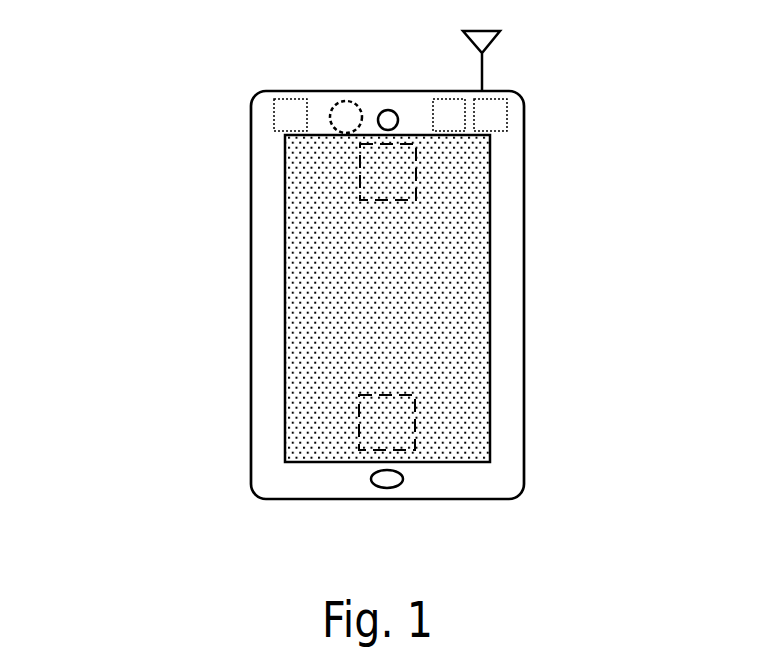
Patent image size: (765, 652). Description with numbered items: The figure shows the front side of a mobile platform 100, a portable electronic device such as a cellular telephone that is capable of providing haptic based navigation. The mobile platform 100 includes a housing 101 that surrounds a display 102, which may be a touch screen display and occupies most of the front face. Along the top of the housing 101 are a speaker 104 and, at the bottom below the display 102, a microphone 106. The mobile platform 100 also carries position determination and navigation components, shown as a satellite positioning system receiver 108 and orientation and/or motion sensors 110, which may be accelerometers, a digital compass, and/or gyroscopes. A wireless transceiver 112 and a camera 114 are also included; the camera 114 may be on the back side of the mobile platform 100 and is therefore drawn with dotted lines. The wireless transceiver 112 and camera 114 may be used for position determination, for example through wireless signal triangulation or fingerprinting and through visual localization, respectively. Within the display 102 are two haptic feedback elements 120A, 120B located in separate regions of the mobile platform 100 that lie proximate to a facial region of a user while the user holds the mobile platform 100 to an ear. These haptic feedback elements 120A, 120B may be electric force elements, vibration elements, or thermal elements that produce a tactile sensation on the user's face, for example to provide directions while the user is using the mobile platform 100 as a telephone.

The mobile platform 100 is at (162, 138).
The housing 101 is at (250, 238).
The display 102 is at (490, 272).
The speaker 104 is at (387, 108).
The microphone 106 is at (372, 483).
The satellite positioning system (SPS) receiver 108 is at (507, 103).
The orientation and/or motion sensors 110 is at (273, 107).
The wireless transceiver 112 is at (443, 98).
The camera 114 is at (335, 110).
The haptic feedback element 120A is at (422, 178).
The haptic feedback element 120B is at (415, 431).